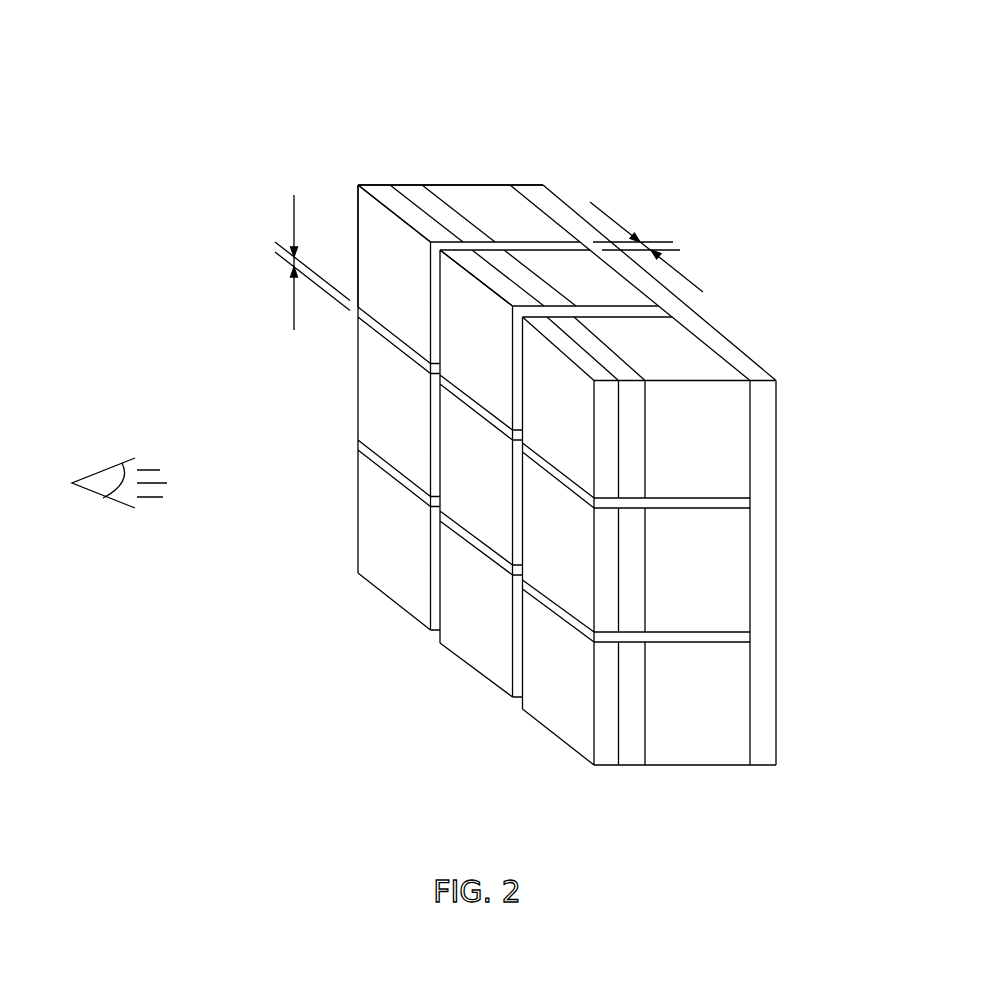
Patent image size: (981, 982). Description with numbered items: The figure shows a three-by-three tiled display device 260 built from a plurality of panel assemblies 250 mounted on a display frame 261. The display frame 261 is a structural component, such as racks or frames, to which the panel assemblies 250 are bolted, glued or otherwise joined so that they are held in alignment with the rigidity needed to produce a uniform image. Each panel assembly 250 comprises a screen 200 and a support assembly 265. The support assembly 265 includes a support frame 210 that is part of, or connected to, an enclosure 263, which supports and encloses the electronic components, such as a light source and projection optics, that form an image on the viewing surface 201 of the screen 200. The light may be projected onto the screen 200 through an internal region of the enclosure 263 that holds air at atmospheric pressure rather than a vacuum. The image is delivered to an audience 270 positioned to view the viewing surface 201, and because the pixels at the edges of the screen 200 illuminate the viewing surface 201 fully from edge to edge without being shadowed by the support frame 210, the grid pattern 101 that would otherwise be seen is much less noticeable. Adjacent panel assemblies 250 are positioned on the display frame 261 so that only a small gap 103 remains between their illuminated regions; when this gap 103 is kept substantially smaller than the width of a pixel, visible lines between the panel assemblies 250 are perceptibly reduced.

The grid pattern 101 is at (420, 462).
The gap 103 is at (489, 250).
The screen 200 is at (385, 193).
The viewing surface 201 is at (366, 212).
The support frame 210 is at (418, 193).
The panel assembly 250 is at (379, 421).
The tiled display device 260 is at (480, 390).
The display frame 261 is at (778, 503).
The enclosure 263 is at (493, 203).
The support assembly 265 is at (483, 148).
The audience 270 is at (103, 498).